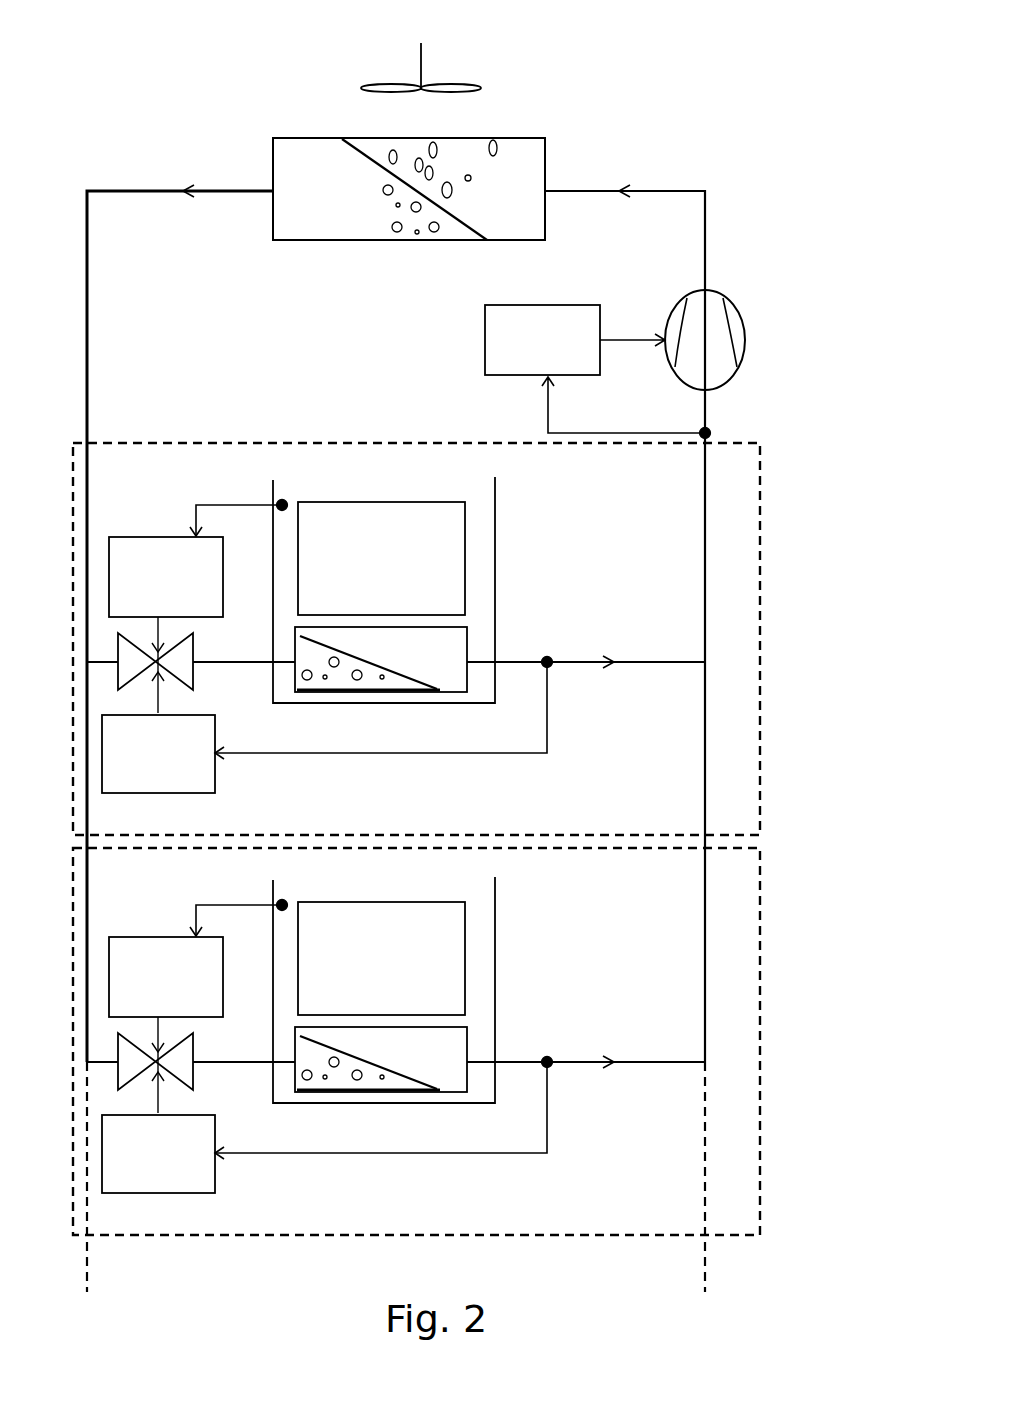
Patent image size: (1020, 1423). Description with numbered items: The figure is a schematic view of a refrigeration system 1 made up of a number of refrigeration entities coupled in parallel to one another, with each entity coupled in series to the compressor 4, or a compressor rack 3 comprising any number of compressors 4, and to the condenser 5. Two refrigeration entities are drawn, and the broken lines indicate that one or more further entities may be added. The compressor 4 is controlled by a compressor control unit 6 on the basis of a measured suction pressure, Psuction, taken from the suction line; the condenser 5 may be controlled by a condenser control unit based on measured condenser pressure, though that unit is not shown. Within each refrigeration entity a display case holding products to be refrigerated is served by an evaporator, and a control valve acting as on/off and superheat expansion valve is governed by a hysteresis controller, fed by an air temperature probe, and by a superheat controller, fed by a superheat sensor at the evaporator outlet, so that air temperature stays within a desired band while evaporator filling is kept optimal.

The refrigeration system 1 is at (183, 68).
The compressor rack 3 is at (742, 280).
The compressor 4 is at (720, 360).
The condenser 5 is at (513, 185).
The compressor control unit 6 is at (500, 345).